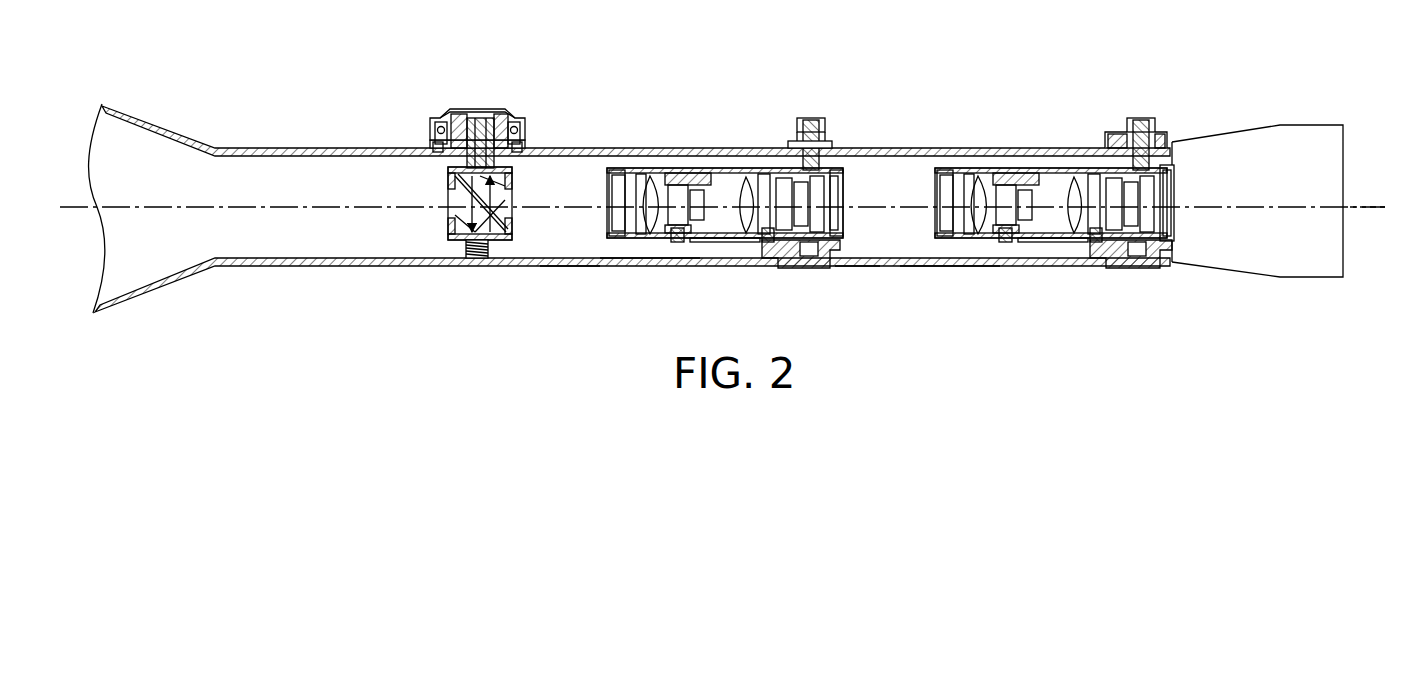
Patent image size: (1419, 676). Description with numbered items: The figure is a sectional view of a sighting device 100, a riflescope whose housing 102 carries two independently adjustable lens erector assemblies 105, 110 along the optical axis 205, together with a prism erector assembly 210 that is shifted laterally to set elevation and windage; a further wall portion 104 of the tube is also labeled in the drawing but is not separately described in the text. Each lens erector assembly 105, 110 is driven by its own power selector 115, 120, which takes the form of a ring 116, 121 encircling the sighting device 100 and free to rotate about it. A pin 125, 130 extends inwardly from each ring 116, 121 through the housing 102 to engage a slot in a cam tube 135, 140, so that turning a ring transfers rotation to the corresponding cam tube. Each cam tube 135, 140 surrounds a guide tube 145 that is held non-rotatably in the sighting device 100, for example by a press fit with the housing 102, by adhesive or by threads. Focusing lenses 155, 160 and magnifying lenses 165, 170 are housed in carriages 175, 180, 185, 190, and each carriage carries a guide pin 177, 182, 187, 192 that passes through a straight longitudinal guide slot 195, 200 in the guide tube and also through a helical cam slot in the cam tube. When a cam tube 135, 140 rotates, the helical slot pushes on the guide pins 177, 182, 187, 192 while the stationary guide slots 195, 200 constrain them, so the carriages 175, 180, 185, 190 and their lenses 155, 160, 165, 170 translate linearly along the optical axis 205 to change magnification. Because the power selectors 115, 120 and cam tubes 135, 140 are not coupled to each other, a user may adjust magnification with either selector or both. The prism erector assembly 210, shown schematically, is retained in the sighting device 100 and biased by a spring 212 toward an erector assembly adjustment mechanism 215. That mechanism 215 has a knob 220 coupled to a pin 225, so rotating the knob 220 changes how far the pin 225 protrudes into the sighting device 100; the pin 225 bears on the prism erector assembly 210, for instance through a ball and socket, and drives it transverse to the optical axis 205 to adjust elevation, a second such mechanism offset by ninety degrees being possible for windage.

The sighting device 100 is at (603, 135).
The housing 102 is at (846, 266).
The tube wall portion 104 is at (572, 258).
The lens erector assembly 105 is at (955, 282).
The lens erector assembly 110 is at (638, 320).
The power selector 115 is at (1098, 100).
The ring 116 is at (1150, 122).
The power selector 120 is at (783, 98).
The ring 121 is at (824, 136).
The pin 125 is at (1138, 118).
The pin 130 is at (808, 118).
The cam tube 135 is at (1092, 176).
The cam tube 140 is at (756, 175).
The guide tube 145 is at (1166, 146).
The focusing lens 155 is at (980, 175).
The focusing lens 160 is at (652, 175).
The magnifying lens 165 is at (1070, 176).
The magnifying lens 170 is at (742, 176).
The carriage 175 is at (1008, 175).
The guide pin 177 is at (1004, 244).
The carriage 180 is at (1118, 250).
The guide pin 182 is at (1098, 246).
The carriage 185 is at (680, 175).
The guide pin 187 is at (676, 244).
The carriage 190 is at (795, 258).
The guide pin 192 is at (768, 248).
The longitudinal guide slot 195 is at (1050, 244).
The longitudinal guide slot 200 is at (722, 242).
The optical axis 205 is at (1368, 200).
The prism erector assembly 210 is at (450, 178).
The spring 212 is at (470, 254).
The erector assembly adjustment mechanism 215 is at (473, 70).
The knob 220 is at (462, 112).
The pin 225 is at (480, 120).